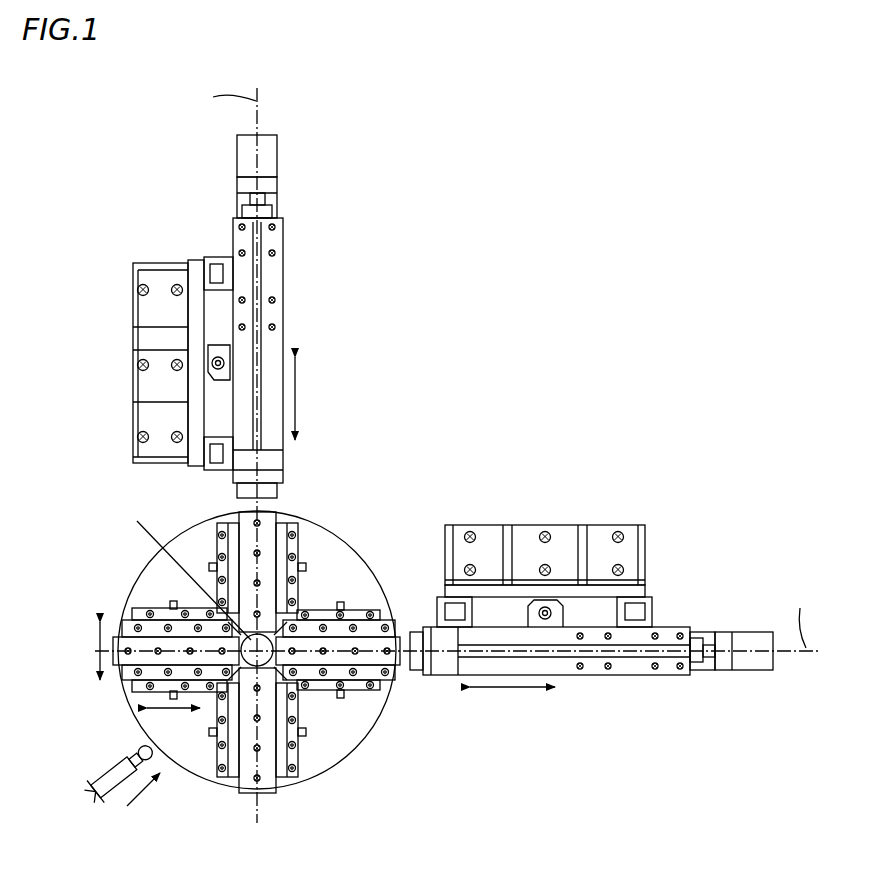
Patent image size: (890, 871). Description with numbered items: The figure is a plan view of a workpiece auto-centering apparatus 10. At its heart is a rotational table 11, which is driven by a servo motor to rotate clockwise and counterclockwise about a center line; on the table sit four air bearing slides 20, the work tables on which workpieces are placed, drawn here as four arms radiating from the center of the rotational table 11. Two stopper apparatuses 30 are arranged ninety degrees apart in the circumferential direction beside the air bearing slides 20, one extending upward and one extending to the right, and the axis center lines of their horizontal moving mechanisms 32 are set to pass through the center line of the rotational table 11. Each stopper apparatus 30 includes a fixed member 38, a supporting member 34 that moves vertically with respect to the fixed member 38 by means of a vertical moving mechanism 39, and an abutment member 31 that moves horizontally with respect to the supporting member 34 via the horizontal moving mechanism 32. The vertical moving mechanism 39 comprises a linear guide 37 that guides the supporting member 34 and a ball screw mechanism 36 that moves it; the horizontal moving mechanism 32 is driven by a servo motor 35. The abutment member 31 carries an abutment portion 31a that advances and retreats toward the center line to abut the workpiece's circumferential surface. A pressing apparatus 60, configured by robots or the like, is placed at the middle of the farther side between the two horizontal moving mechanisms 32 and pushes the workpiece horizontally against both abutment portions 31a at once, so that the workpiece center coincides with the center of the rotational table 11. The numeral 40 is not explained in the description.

The workpiece auto-centering apparatus 10 is at (582, 195).
The rotational table 11 is at (186, 776).
The air bearing slide 20 is at (350, 700).
The stopper apparatus 30 is at (300, 176).
The abutment member 31 is at (270, 272).
The abutment portion 31a is at (280, 491).
The horizontal moving mechanism 32 is at (230, 196).
The supporting member 34 is at (272, 198).
The servo motor 35 is at (247, 152).
The ball screw mechanism 36 is at (198, 360).
The linear guide 37 is at (210, 268).
The fixed member 38 is at (150, 300).
The vertical moving mechanism 39 is at (206, 380).
The clamp arm 40 is at (250, 693).
The pressing apparatus 60 is at (120, 762).